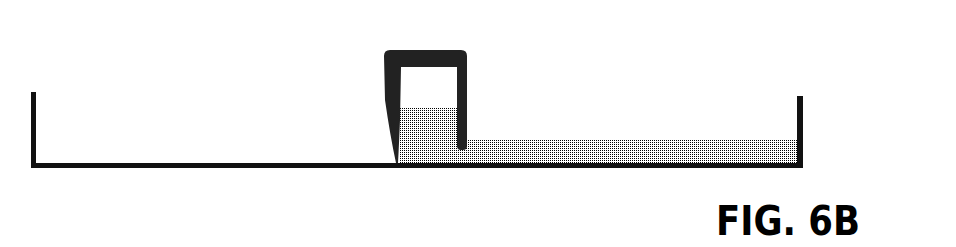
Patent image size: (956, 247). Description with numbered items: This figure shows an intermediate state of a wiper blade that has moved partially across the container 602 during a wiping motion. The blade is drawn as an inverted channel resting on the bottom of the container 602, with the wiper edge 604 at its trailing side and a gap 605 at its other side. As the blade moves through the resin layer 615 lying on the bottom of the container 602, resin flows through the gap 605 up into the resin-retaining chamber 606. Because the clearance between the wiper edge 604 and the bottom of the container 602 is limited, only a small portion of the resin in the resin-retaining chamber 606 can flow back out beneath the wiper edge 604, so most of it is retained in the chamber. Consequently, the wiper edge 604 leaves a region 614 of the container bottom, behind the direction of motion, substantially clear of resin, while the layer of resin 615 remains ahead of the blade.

The container 602 is at (789, 96).
The wiper edge 604 is at (405, 165).
The gap 605 is at (462, 157).
The resin-retaining chamber 606 is at (447, 125).
The region of the bottom of the container 614 is at (124, 157).
The layer of resin 615 is at (610, 143).